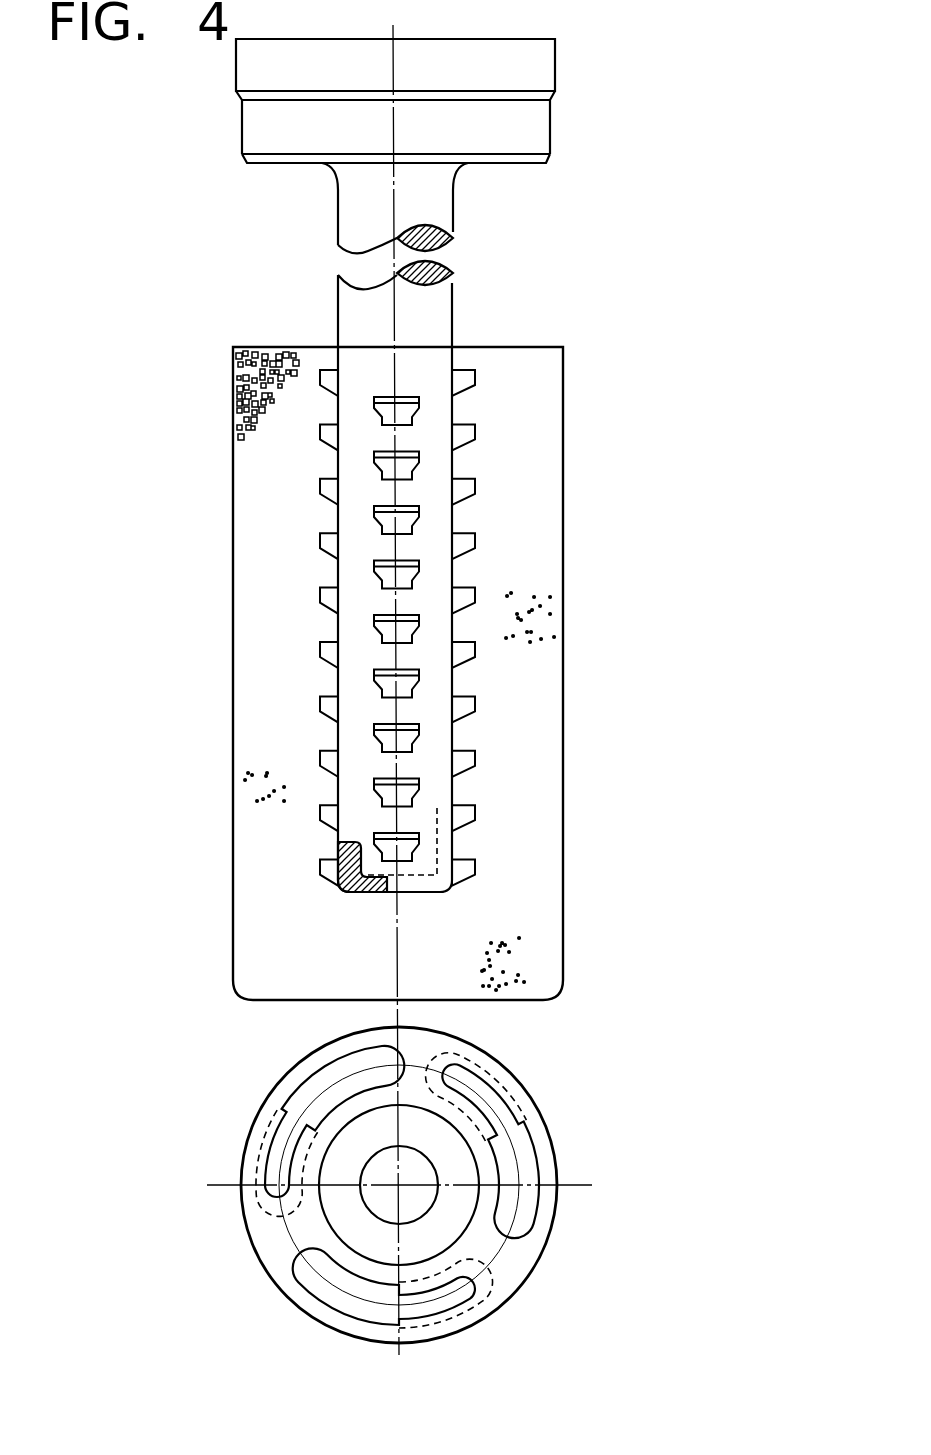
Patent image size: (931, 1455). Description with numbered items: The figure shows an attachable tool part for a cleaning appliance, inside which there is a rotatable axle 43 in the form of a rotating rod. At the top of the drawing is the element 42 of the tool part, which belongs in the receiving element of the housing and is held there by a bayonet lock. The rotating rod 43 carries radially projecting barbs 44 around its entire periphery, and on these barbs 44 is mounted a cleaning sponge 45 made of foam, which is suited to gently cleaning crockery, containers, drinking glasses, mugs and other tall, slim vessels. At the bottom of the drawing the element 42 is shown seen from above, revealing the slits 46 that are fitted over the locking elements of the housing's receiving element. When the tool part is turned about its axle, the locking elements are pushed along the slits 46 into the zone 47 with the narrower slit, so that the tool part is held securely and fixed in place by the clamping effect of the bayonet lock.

The element of the tool part 42 is at (580, 1131).
The rotatable axle 43 is at (437, 310).
The barbs 44 is at (475, 750).
The cleaning sponge 45 is at (273, 350).
The slits 46 is at (308, 1088).
The zone with the narrower slit 47 is at (275, 1167).